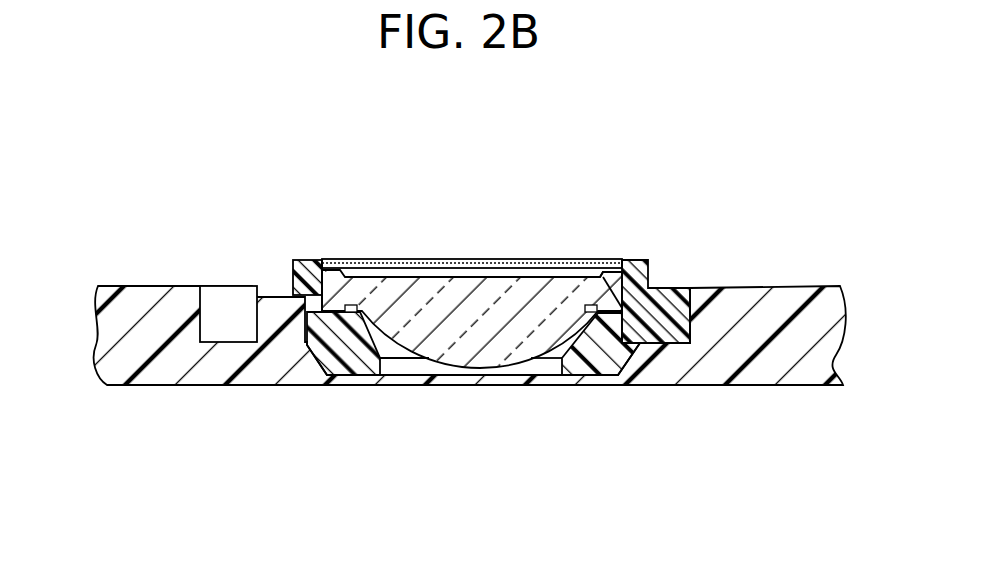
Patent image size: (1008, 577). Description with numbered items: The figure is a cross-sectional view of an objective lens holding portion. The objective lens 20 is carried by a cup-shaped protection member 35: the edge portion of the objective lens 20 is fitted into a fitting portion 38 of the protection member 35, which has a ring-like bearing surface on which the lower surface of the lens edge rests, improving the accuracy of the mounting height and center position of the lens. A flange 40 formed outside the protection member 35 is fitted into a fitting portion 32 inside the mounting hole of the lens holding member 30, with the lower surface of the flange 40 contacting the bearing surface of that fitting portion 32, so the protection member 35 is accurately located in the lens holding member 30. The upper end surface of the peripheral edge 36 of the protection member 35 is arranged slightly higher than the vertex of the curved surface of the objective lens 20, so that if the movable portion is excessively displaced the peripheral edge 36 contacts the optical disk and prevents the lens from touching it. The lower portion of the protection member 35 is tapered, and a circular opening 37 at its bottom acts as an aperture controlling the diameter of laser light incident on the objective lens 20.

The objective lens 20 is at (470, 271).
The lens holding member 30 is at (760, 303).
The fitting portion 32 is at (672, 297).
The protection member 35 is at (608, 368).
The peripheral edge 36 is at (303, 262).
The opening 37 is at (403, 367).
The fitting portion 38 is at (600, 270).
The flange 40 is at (668, 335).